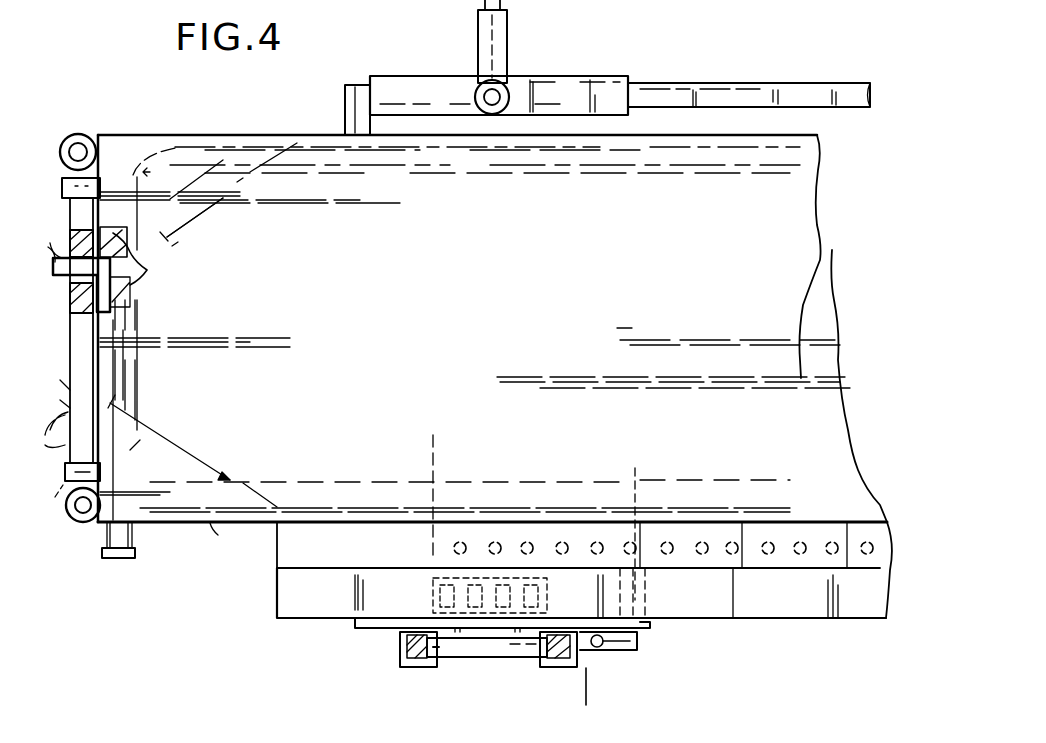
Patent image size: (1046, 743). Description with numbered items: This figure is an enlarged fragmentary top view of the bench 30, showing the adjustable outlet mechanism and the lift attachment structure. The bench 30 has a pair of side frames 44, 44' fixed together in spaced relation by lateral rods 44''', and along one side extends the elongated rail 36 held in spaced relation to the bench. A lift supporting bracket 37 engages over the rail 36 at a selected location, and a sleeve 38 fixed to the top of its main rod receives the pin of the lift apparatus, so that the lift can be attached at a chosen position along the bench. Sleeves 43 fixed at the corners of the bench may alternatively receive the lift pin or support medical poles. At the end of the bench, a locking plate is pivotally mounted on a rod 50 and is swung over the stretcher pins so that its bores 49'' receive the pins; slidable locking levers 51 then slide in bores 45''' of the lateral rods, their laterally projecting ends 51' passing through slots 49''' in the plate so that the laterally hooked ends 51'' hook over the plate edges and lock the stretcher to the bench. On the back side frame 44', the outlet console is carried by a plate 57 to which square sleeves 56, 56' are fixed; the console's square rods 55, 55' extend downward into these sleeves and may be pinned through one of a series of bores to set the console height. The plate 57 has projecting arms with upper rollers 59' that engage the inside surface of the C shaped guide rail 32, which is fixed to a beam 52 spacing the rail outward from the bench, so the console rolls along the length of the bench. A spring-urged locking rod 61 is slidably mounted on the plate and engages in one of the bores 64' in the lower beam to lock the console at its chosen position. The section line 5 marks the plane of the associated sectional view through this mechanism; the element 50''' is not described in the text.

The bench 30 is at (835, 256).
The guide rail 32 is at (308, 612).
The rail 36 is at (660, 83).
The lift supporting bracket 37 is at (508, 63).
The sleeve 38 is at (480, 88).
The sleeves 43 is at (90, 137).
The side frame 44 is at (212, 542).
The side frame 44' is at (221, 171).
The lateral rods 44''' is at (191, 227).
The bores 45''' is at (152, 385).
The bores 49'' is at (155, 267).
The slots 49''' is at (192, 451).
The rod 50 is at (45, 504).
The bearing 50''' is at (160, 315).
The slidable locking levers 51 is at (126, 370).
The laterally projecting ends 51' is at (82, 273).
The laterally hooked ends 51'' is at (46, 337).
The beam 52 is at (277, 545).
The square rod 55 is at (473, 671).
The square rod 55' is at (514, 672).
The square sleeve 56 is at (398, 662).
The square sleeve 56' is at (586, 661).
The plate 57 is at (393, 627).
The upper rollers 59' is at (472, 595).
The locking rod 61 is at (638, 641).
The bores 64' is at (638, 523).
The section line 5- 5 is at (432, 465).